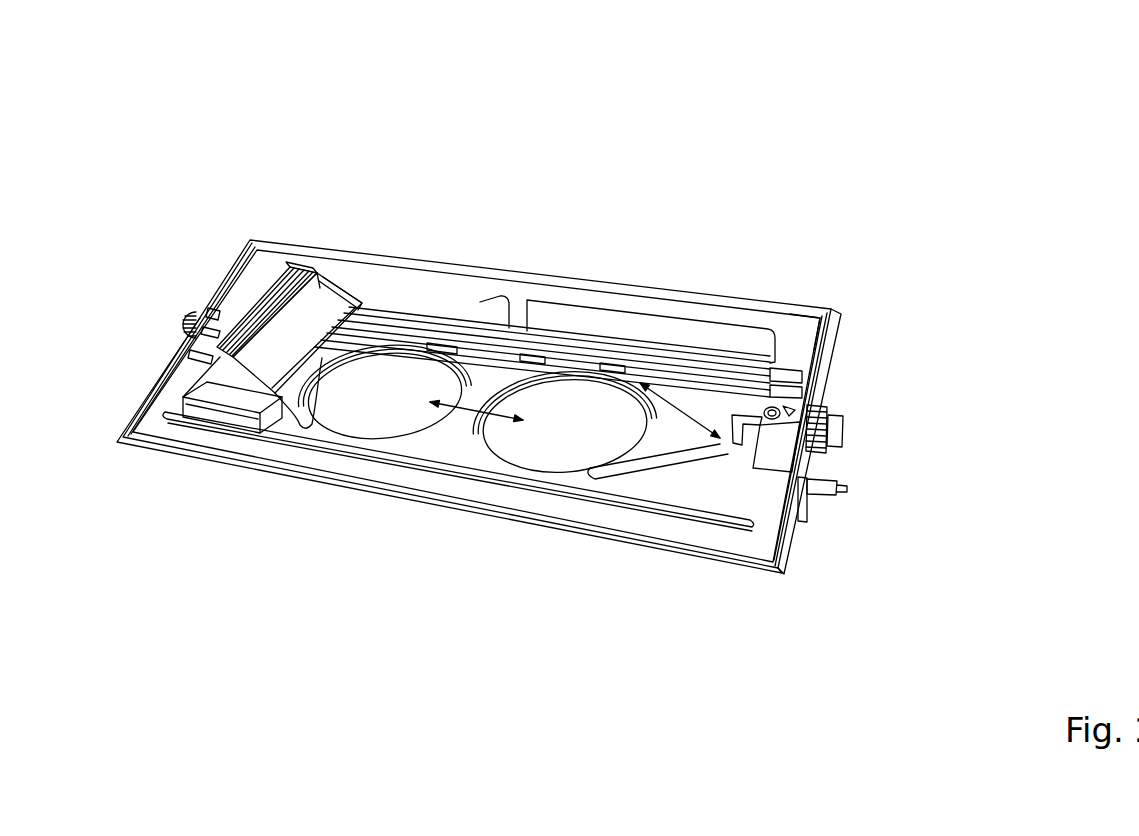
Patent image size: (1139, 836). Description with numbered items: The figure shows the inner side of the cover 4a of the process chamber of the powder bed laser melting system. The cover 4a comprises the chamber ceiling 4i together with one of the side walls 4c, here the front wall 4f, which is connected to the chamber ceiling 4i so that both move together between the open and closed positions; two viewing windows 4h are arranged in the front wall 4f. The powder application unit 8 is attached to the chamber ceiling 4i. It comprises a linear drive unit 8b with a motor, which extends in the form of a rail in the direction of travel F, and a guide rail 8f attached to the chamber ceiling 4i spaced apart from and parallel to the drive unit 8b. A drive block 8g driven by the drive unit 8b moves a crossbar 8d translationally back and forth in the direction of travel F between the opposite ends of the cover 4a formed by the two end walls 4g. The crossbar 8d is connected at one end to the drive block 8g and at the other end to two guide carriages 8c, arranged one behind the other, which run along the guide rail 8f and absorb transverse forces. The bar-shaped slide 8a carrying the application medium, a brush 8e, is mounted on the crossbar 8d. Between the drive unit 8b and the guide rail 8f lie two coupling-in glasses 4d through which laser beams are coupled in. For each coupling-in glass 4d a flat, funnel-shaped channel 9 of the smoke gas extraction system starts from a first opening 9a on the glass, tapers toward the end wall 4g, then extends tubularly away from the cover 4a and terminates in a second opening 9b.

The cover 4a is at (683, 197).
The side wall 4c is at (247, 268).
The end wall 4g is at (574, 375).
The front wall 4f is at (800, 330).
The viewing window 4h is at (484, 300).
The coupling-in glass 4d is at (362, 418).
The chamber ceiling 4i is at (745, 487).
The powder application unit 8 is at (274, 286).
The crossbar 8d is at (341, 295).
The drive block 8g is at (350, 295).
The linear drive unit 8b is at (392, 293).
The guide carriage 8c is at (190, 433).
The guide rail 8f is at (455, 470).
The slide 8a is at (207, 353).
The brush 8e is at (141, 358).
The channel 9 is at (308, 425).
The first opening 9a is at (345, 385).
The second opening 9b is at (213, 306).
The direction of travel F is at (457, 418).